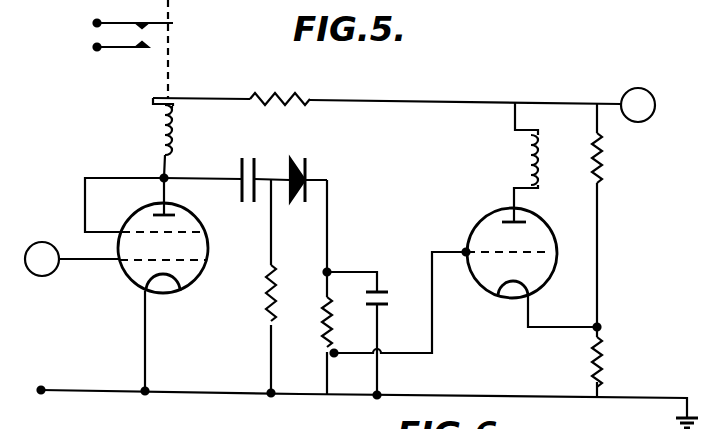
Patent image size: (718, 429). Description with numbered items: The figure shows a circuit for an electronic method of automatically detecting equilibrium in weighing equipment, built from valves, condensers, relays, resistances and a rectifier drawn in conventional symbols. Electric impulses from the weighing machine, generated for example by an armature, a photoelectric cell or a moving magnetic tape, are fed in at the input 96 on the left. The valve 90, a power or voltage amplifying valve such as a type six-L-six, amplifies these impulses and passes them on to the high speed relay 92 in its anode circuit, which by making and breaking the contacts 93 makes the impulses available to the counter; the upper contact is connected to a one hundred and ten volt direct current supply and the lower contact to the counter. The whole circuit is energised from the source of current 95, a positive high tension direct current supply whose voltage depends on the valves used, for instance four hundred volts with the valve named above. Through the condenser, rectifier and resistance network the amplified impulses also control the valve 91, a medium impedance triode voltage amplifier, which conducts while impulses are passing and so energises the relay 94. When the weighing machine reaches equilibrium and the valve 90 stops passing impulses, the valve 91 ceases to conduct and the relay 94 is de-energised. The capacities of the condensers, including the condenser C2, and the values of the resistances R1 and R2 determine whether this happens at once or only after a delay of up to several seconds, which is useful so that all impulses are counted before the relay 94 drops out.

The valve 90 is at (193, 272).
The valve 91 is at (546, 279).
The relay 92 is at (153, 150).
The contacts 93 is at (169, 49).
The relay 94 is at (538, 169).
The source of current 95 is at (638, 105).
The input for electric impulses 96 is at (42, 259).
The resistance R1 is at (266, 324).
The resistance R2 is at (335, 356).
The condenser C2 is at (384, 304).